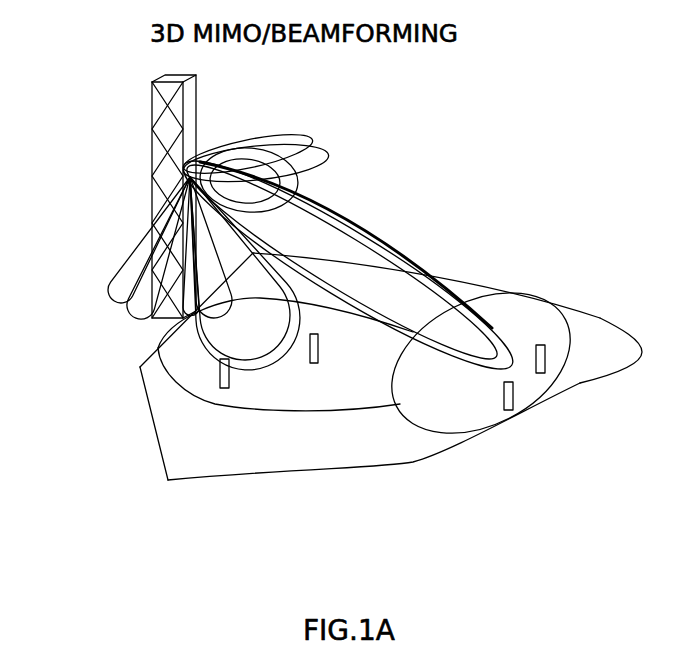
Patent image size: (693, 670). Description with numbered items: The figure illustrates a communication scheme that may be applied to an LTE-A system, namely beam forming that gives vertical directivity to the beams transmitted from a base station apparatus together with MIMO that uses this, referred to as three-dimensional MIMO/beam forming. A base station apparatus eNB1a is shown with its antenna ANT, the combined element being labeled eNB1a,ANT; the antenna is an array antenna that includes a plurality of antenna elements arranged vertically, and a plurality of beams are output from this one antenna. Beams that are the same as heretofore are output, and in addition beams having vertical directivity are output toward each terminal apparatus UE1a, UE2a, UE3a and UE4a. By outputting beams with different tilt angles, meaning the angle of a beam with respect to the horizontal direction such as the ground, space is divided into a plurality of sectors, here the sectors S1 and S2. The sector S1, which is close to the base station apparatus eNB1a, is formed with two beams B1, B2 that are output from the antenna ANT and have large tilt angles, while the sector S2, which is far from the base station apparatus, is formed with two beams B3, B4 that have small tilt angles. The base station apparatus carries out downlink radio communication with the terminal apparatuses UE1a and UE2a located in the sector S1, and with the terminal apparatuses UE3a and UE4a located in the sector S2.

The base station apparatus eNB1a is at (287, 195).
The antenna ANT is at (287, 195).
The base station apparatus and antenna eNB1a,ANT is at (207, 118).
The beam B1 is at (258, 372).
The beam B2 is at (277, 355).
The beam B3 is at (500, 340).
The beam B4 is at (478, 365).
The sector S1 is at (148, 393).
The sector S2 is at (596, 318).
The terminal apparatus UE1a is at (226, 388).
The terminal apparatus UE2a is at (313, 363).
The terminal apparatus UE3a is at (509, 410).
The terminal apparatus UE4a is at (541, 373).